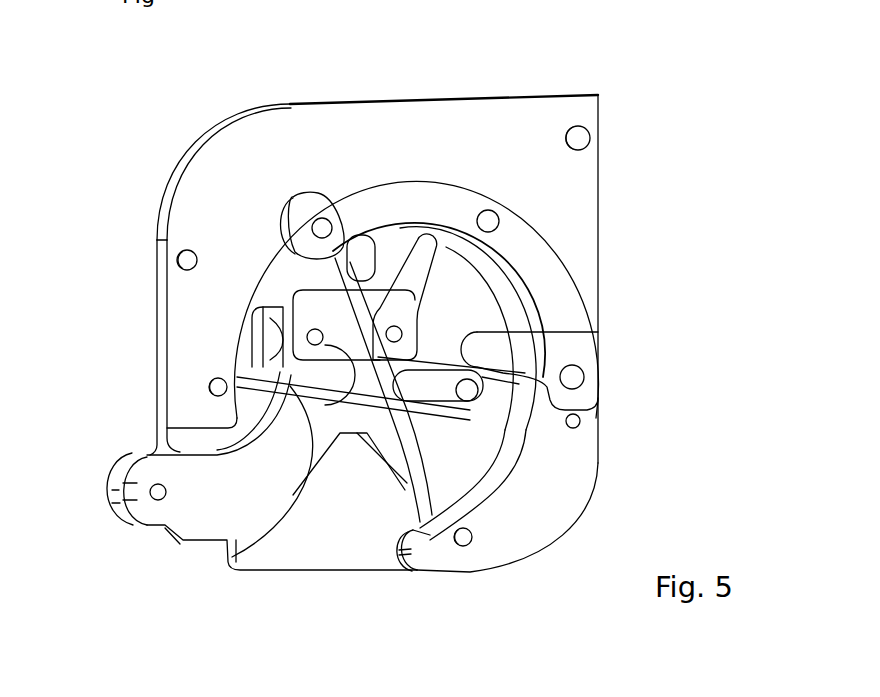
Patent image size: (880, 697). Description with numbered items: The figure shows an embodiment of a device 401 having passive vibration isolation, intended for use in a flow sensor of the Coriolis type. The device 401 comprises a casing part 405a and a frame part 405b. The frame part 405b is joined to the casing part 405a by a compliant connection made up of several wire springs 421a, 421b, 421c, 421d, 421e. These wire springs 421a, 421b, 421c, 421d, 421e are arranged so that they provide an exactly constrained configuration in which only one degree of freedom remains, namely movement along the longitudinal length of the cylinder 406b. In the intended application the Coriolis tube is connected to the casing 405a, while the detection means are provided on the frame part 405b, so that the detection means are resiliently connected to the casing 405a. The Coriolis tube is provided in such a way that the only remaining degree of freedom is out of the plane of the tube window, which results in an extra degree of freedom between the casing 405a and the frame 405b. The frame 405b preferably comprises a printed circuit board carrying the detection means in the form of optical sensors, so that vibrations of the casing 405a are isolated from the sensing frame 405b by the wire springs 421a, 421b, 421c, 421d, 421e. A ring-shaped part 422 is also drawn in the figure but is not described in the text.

The device 401 is at (620, 80).
The casing part 405a is at (217, 178).
The frame part 405b is at (148, 453).
The ring gear 422 is at (547, 277).
The wire spring 421a is at (367, 234).
The wire spring 421b is at (425, 257).
The wire spring 421c is at (597, 331).
The wire spring 421d is at (420, 478).
The wire spring 421e is at (232, 556).
The cylinder 406b is at (437, 385).